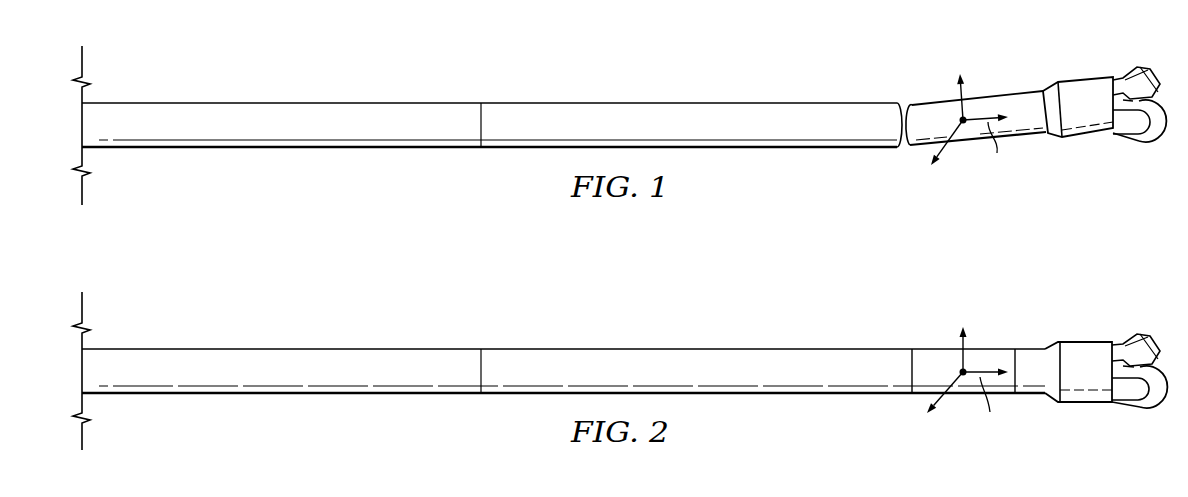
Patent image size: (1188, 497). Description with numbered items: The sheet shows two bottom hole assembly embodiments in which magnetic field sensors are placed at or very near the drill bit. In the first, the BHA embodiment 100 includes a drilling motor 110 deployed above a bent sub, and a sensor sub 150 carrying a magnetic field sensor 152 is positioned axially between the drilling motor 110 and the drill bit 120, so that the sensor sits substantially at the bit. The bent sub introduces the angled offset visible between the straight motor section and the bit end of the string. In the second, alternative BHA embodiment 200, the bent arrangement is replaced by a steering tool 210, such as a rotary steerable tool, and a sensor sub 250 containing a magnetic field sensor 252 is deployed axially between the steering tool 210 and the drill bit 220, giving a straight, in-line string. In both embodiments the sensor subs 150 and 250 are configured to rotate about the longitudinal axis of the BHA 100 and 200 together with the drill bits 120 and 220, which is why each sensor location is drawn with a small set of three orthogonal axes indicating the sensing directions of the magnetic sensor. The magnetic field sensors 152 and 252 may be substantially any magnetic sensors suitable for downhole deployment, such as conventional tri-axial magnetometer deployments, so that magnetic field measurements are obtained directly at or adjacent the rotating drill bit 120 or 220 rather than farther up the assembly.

In FIG. 1, the BHA embodiment 100 is at (480, 64).
In FIG. 1, the drilling motor 110 is at (727, 103).
In FIG. 1, the drill bit 120 is at (1087, 77).
In FIG. 1, the sensor sub 150 is at (1005, 92).
In FIG. 1, the magnetic field sensor 152 is at (967, 126).
In FIG. 2, the BHA embodiment 200 is at (480, 311).
In FIG. 2, the steering tool 210 is at (727, 349).
In FIG. 2, the drill bit 220 is at (1093, 342).
In FIG. 2, the sensor sub 250 is at (990, 350).
In FIG. 2, the magnetic field sensor 252 is at (961, 370).